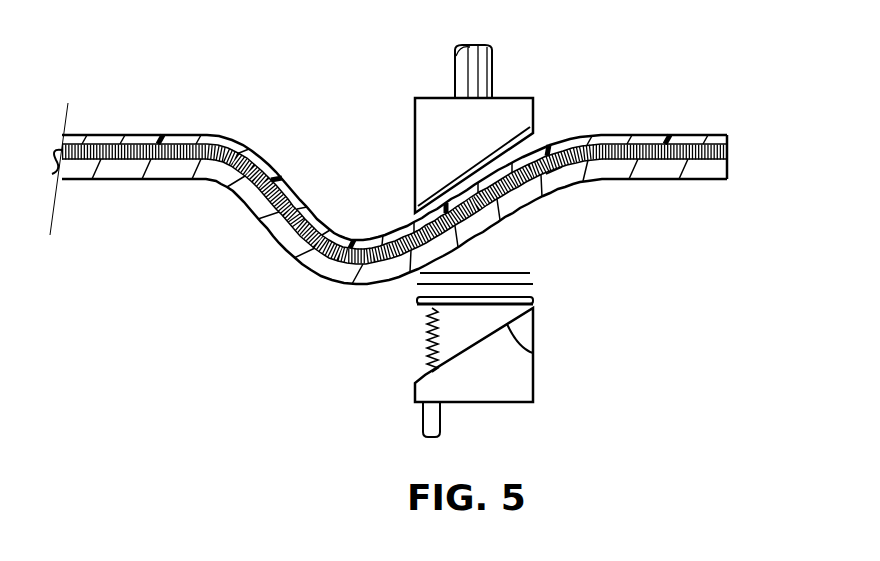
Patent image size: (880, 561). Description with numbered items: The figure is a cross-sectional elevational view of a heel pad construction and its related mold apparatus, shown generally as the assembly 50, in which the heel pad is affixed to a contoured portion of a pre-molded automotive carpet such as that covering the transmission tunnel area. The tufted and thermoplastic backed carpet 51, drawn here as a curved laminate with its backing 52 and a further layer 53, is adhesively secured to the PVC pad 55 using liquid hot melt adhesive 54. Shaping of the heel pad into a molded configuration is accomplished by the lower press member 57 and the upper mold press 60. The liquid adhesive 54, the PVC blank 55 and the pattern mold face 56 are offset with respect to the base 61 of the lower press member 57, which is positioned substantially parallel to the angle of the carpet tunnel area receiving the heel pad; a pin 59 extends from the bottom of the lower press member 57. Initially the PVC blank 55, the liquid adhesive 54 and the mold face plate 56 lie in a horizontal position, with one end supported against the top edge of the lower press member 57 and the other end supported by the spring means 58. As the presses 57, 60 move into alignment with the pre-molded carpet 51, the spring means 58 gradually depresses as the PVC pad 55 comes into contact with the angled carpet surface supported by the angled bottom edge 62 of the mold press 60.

The laminate assembly 50 is at (747, 73).
The tufted and thermoplastic backed carpet 51 is at (728, 150).
The backing layer 52 is at (728, 178).
The adhesive layer 53 is at (540, 182).
The liquid hot melt adhesive 54 is at (530, 273).
The PVC pad 55 is at (533, 283).
The pattern mold face 56 is at (533, 301).
The lower press member 57 is at (520, 387).
The spring means 58 is at (427, 338).
The guide pin 59 is at (436, 425).
The mold press 60 is at (523, 117).
The base 61 is at (533, 353).
The angled bottom edge 62 is at (470, 173).